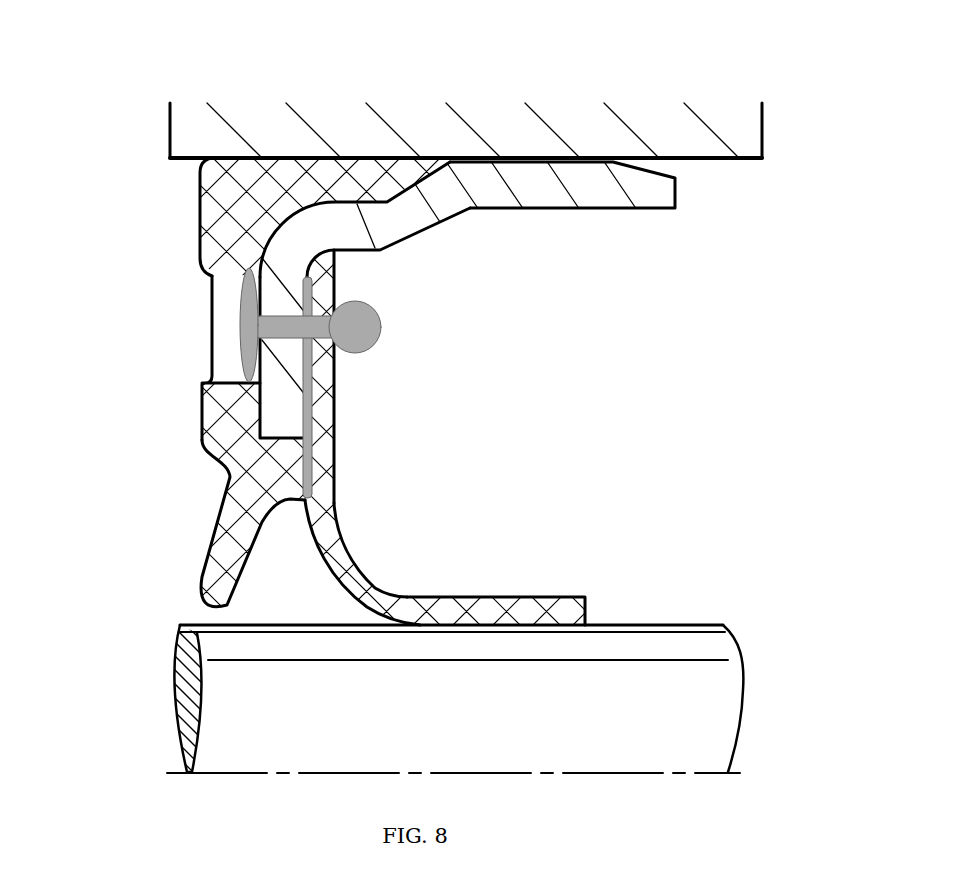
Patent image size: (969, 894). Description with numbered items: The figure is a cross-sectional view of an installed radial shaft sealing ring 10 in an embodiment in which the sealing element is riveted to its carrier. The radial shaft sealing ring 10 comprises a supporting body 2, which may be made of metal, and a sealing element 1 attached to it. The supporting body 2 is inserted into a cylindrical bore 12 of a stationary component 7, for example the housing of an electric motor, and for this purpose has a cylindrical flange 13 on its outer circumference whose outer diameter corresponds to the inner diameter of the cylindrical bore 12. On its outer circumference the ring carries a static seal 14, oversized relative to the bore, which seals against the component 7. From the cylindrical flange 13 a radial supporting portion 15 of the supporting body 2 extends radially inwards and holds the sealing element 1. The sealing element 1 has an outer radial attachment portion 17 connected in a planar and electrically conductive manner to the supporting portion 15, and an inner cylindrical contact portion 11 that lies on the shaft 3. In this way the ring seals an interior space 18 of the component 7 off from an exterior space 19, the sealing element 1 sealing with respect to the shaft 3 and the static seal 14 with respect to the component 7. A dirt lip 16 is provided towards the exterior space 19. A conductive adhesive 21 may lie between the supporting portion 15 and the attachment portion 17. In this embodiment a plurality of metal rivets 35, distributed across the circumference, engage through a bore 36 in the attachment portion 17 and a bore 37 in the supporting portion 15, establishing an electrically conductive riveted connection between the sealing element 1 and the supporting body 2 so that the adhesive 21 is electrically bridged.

The sealing element 1 is at (357, 552).
The supporting body 2 is at (442, 236).
The shaft 3 is at (710, 712).
The component 7 is at (675, 133).
The radial shaft sealing ring 10 is at (163, 274).
The contact portion 11 is at (510, 612).
The cylindrical bore 12 is at (690, 105).
The cylindrical flange 13 is at (530, 187).
The static seal 14 is at (370, 182).
The supporting portion 15 is at (283, 403).
The dirt lip 16 is at (233, 527).
The attachment portion 17 is at (325, 456).
The interior space 18 is at (592, 410).
The exterior space 19 is at (78, 383).
The conductive adhesive 21 is at (312, 382).
The metal rivet 35 is at (283, 327).
The bore 36 is at (353, 340).
The bore 37 is at (262, 331).